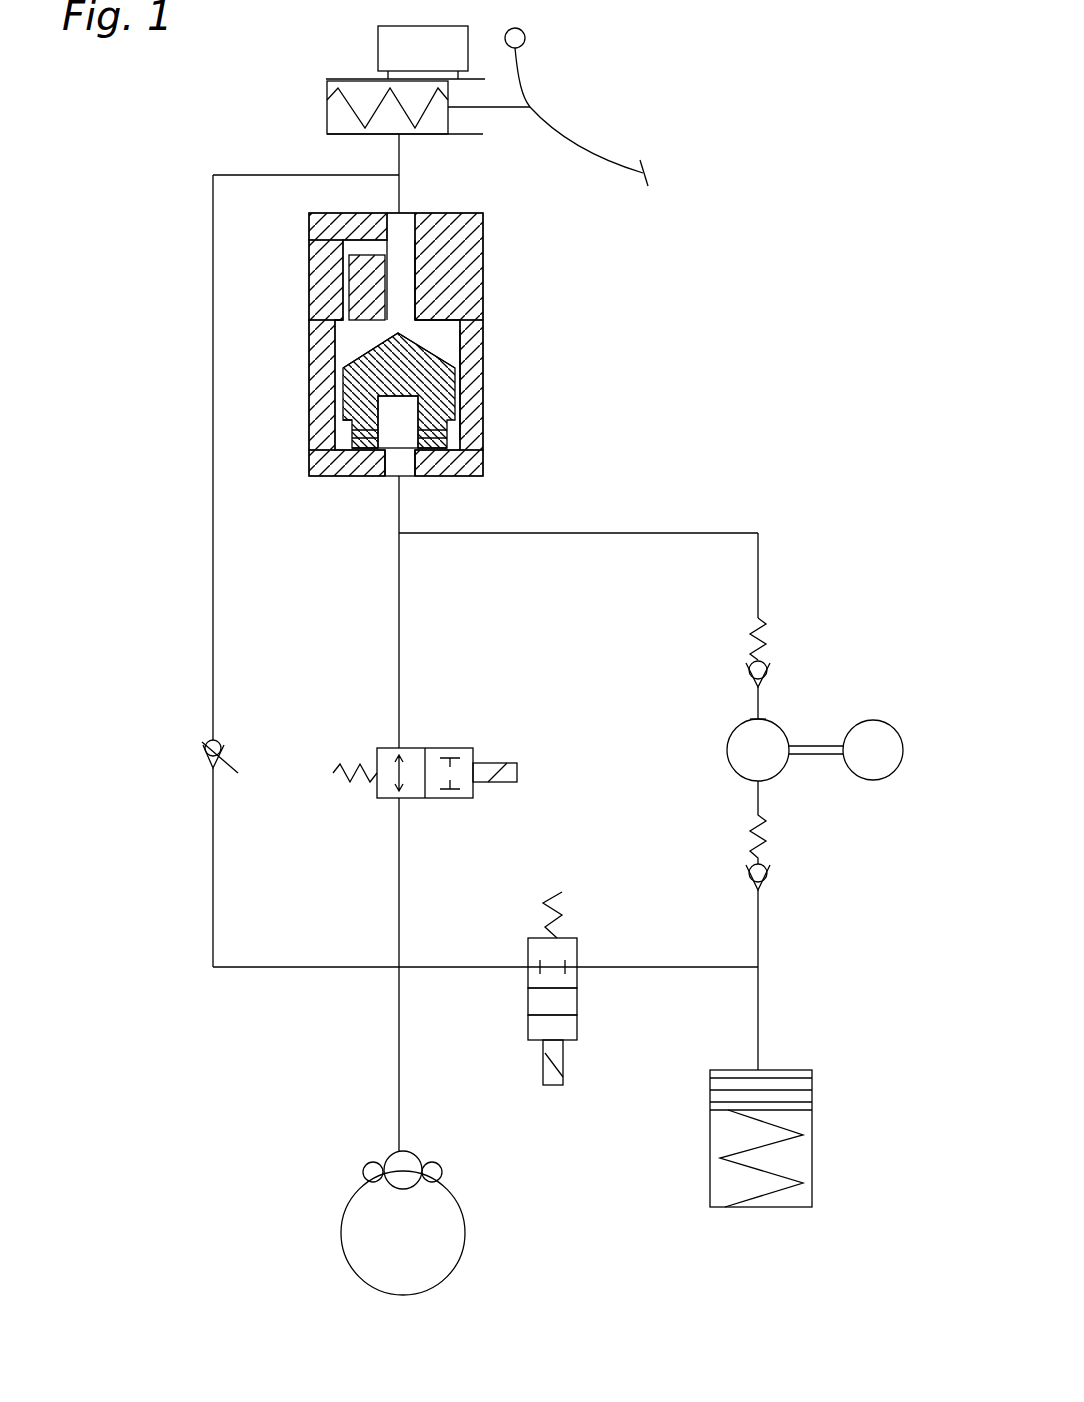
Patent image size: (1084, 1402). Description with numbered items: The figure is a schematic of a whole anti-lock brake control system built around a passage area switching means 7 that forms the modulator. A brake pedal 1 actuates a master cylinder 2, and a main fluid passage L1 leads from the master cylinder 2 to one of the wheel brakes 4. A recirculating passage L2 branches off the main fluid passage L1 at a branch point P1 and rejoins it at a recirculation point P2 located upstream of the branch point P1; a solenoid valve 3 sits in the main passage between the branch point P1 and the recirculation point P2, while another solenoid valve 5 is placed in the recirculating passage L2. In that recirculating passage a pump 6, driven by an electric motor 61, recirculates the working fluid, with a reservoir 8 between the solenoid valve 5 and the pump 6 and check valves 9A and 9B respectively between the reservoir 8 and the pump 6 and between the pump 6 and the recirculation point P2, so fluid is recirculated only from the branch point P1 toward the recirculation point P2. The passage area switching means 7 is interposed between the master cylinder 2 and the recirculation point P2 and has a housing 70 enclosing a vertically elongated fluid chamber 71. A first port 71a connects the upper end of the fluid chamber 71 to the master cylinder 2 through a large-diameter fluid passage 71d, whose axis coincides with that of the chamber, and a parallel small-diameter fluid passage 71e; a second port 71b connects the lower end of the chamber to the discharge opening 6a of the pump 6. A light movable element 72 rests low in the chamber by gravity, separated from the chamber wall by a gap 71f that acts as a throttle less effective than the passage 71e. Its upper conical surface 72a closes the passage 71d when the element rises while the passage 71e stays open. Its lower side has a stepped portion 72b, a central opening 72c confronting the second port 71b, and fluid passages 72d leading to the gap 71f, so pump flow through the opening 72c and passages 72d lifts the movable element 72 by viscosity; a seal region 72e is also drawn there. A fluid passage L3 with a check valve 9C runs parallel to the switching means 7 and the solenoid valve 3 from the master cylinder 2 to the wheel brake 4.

The brake pedal 1 is at (548, 127).
The master cylinder 2 is at (442, 137).
The solenoid valve 3 is at (425, 748).
The wheel brake 4 is at (458, 1198).
The solenoid valve 5 is at (577, 960).
The pump 6 is at (750, 725).
The discharge opening 6a is at (758, 718).
The electric motor 61 is at (850, 776).
The passage area switching means 7 is at (428, 363).
The housing 70 is at (474, 270).
The fluid chamber 71 is at (452, 328).
The first port 71a is at (470, 222).
The second port 71b is at (392, 463).
The fluid passage 71d is at (405, 287).
The fluid passage 71e is at (349, 287).
The gap 71f is at (460, 378).
The movable element 72 is at (410, 433).
The conical surface 72a is at (377, 343).
The stepped portion 72b is at (320, 478).
The opening 72c is at (403, 410).
The fluid passages 72d is at (475, 462).
The seal ring 72e is at (335, 412).
The reservoir 8 is at (813, 1138).
The check valve 9A is at (772, 876).
The check valve 9B is at (770, 676).
The check valve 9C is at (238, 768).
The main fluid passage L1 is at (401, 637).
The recirculating passage L2 is at (757, 580).
The fluid passage L3 is at (213, 655).
The branch point P1 is at (403, 963).
The recirculation point P2 is at (405, 533).